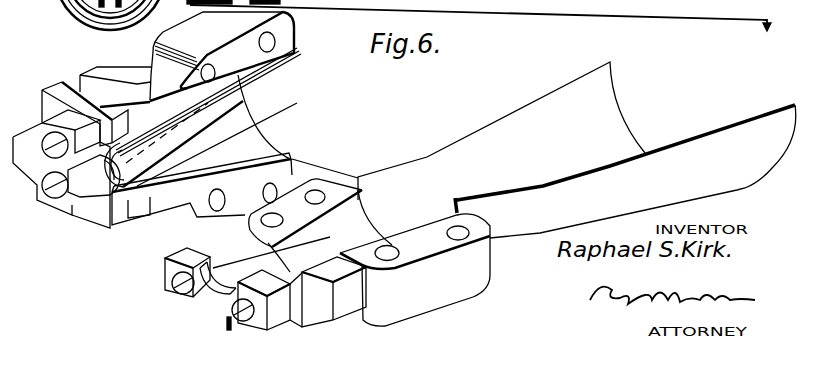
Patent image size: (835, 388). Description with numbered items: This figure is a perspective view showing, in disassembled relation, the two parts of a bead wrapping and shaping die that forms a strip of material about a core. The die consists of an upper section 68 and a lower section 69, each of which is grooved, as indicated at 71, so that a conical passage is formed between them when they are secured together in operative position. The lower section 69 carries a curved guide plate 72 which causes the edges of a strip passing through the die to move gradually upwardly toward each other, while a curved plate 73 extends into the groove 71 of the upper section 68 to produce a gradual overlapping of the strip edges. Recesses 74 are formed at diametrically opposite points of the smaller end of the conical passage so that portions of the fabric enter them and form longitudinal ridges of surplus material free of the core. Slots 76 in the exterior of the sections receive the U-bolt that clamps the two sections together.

The upper section 68 is at (182, 38).
The lower section 69 is at (453, 293).
The groove 71 is at (331, 230).
The curved guide plate 72 is at (528, 108).
The curved plate 73 is at (134, 176).
The recesses 74 is at (72, 191).
The slots 76 is at (82, 90).